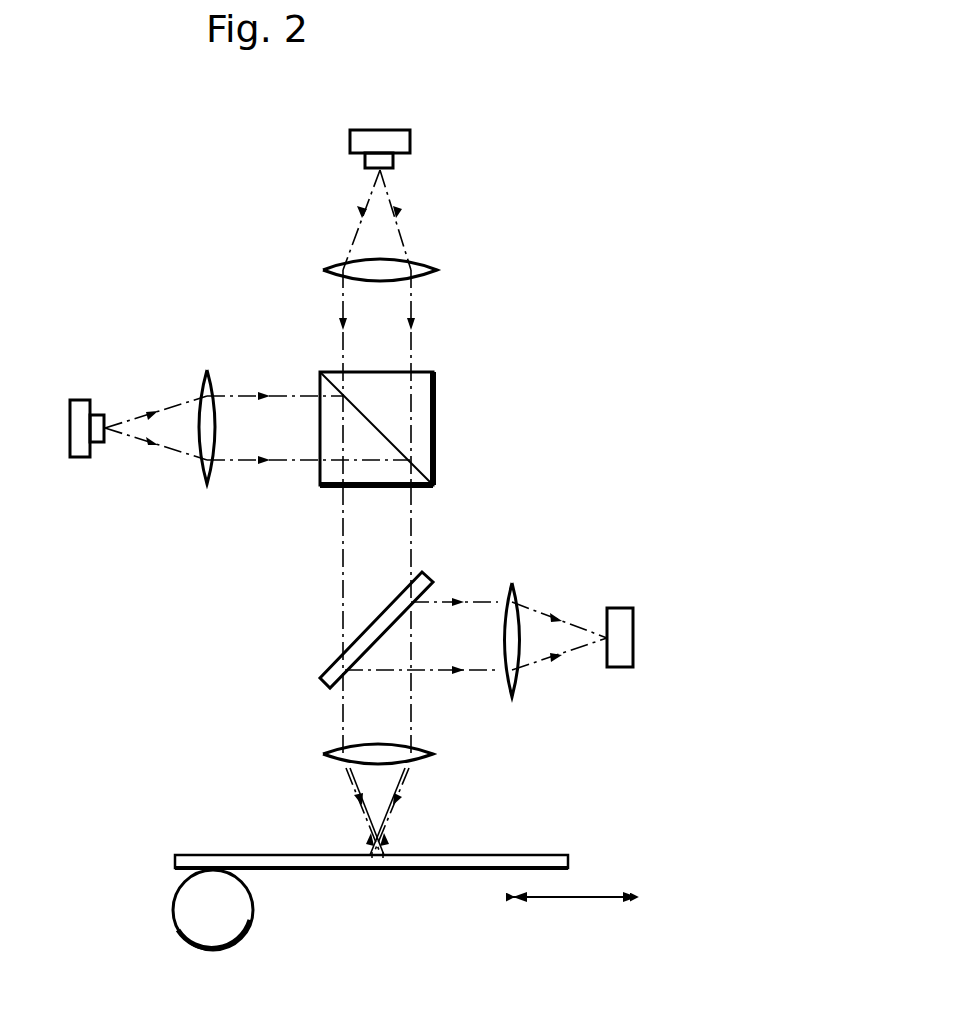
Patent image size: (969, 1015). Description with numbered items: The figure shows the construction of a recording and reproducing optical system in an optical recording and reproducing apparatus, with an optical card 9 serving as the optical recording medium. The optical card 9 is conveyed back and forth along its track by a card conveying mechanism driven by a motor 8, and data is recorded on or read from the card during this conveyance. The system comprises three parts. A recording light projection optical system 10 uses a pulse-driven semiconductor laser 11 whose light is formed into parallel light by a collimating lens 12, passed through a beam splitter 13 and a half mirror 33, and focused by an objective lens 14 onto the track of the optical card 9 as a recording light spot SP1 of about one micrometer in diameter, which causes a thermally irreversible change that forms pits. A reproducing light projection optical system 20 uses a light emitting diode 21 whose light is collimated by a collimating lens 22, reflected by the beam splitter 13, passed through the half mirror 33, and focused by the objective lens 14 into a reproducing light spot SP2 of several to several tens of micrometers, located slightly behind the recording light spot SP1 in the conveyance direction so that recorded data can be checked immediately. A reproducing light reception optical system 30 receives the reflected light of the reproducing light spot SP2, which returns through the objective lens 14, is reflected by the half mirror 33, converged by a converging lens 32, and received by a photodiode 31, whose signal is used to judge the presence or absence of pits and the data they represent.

The motor 8 is at (173, 906).
The optical card 9 is at (555, 855).
The recording light projection optical system 10 is at (490, 235).
The semiconductor laser 11 is at (408, 130).
The collimating lens 12 is at (428, 262).
The beam splitter 13 is at (435, 408).
The objective lens 14 is at (432, 752).
The reproducing light projection optical system 20 is at (242, 366).
The light emitting diode 21 is at (80, 400).
The collimating lens 22 is at (210, 478).
The reproducing light reception optical system 30 is at (545, 556).
The photodiode 31 is at (626, 608).
The converging lens 32 is at (518, 690).
The half mirror 33 is at (426, 574).
The recording light spot SP1 is at (382, 870).
The reproducing light spot SP2 is at (368, 870).